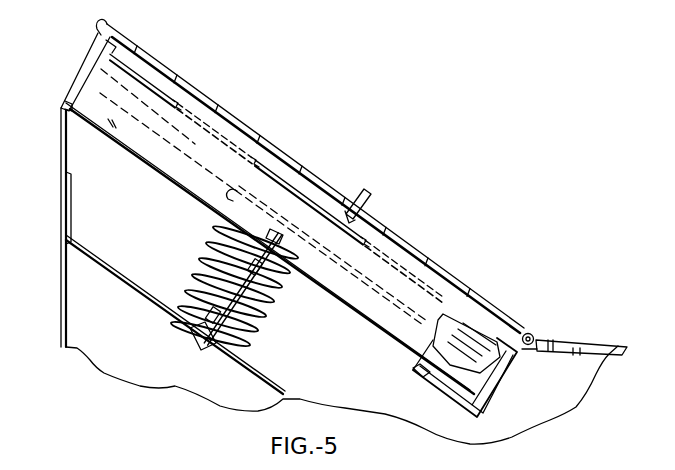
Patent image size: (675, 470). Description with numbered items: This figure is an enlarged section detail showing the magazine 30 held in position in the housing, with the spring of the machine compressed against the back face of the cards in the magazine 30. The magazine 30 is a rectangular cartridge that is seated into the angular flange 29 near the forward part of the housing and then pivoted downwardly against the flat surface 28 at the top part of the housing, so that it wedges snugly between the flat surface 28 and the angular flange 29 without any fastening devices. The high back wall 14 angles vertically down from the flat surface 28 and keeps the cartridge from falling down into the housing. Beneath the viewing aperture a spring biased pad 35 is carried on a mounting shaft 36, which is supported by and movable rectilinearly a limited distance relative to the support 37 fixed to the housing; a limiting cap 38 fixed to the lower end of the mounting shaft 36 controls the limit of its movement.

The back wall 14 is at (62, 250).
The flat surface 28 is at (87, 84).
The angular flange 29 is at (496, 386).
The magazine 30 is at (397, 296).
The spring biased pad 35 is at (347, 281).
The mounting shaft 36 is at (290, 306).
The support 37 is at (161, 301).
The limiting cap 38 is at (206, 349).